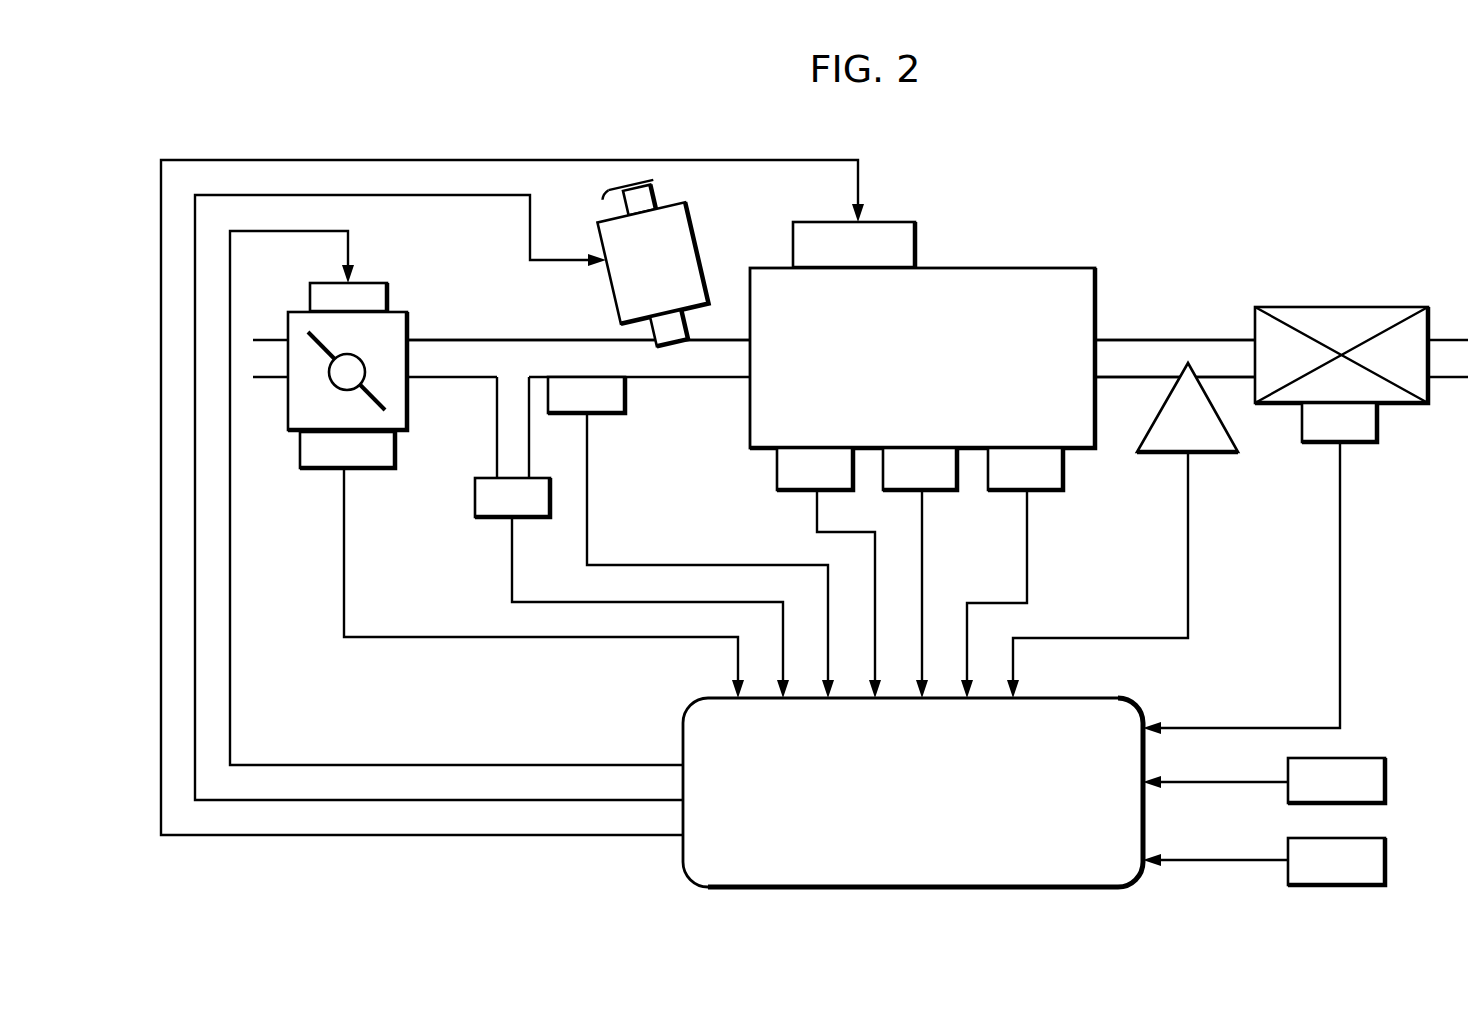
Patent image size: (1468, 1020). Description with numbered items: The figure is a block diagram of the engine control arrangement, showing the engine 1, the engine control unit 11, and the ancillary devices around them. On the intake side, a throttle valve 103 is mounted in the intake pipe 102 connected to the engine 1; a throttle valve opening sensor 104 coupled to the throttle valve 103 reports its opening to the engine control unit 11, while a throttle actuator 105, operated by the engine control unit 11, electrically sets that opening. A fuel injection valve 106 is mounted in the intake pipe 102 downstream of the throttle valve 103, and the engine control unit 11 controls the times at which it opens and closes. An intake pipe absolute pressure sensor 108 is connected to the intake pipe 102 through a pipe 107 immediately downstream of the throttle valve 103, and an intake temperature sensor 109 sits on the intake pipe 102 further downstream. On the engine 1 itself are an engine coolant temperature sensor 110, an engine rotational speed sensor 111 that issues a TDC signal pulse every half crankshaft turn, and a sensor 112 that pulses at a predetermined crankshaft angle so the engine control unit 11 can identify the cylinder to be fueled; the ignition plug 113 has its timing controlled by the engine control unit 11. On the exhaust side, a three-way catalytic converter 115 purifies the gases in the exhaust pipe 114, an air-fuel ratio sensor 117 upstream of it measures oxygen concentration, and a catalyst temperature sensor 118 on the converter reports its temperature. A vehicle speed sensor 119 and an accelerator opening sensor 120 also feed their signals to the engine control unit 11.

The engine 1 is at (1012, 268).
The engine control unit 11 is at (1073, 698).
The intake pipe 102 is at (465, 336).
The throttle valve 103 is at (390, 400).
The throttle valve opening sensor 104 is at (360, 473).
The throttle actuator 105 is at (360, 283).
The fuel injection valve 106 is at (695, 232).
The pipe 107 is at (492, 455).
The intake pipe absolute pressure sensor 108 is at (498, 520).
The intake temperature sensor 109 is at (627, 397).
The engine coolant temperature sensor 110 is at (802, 491).
The engine rotational speed sensor 111 is at (937, 491).
The sensor 112 is at (1042, 491).
The ignition plug 113 is at (890, 222).
The exhaust pipe 114 is at (1152, 341).
The three-way catalytic converter 115 is at (1370, 307).
The air-fuel ratio sensor 117 is at (1203, 454).
The catalyst temperature sensor 118 is at (1362, 444).
The vehicle speed sensor 119 is at (1377, 758).
The accelerator opening sensor 120 is at (1377, 838).